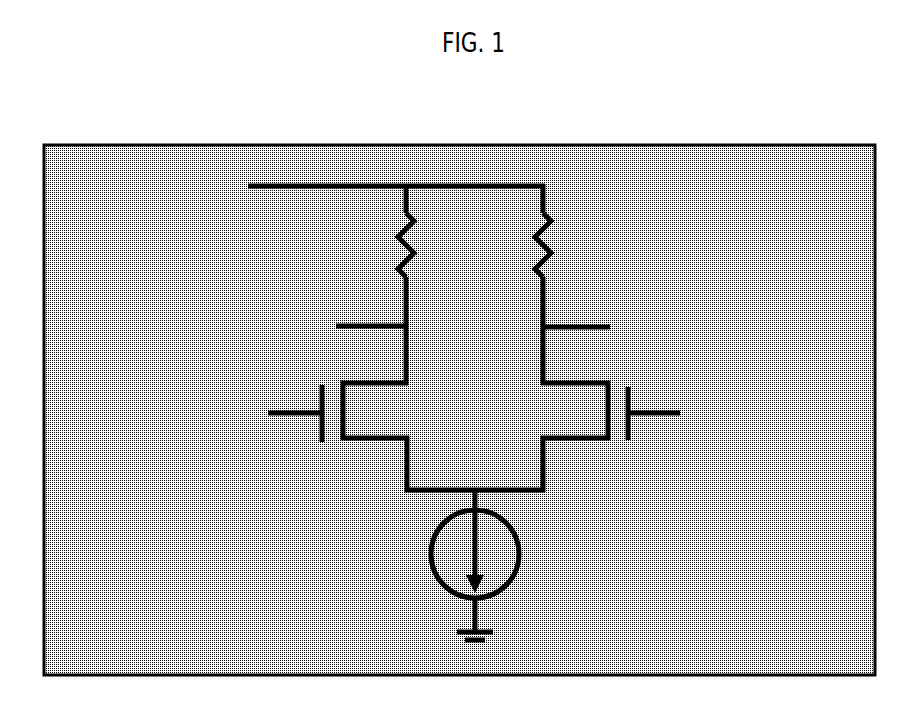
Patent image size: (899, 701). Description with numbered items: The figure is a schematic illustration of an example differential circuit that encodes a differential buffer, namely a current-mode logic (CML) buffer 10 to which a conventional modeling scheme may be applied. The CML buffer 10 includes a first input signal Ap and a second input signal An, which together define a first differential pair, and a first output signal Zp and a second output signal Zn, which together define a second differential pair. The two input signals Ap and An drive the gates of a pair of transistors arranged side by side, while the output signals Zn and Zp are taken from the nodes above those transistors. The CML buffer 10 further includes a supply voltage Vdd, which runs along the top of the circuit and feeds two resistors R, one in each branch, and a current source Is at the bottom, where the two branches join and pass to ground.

The CML buffer 10 is at (459, 410).
The supply voltage Vdd is at (351, 199).
The resistors R is at (476, 284).
The second output signal Zn is at (316, 334).
The first output signal Zp is at (622, 334).
The first input signal Ap is at (305, 437).
The second input signal An is at (649, 437).
The current source Is is at (498, 554).